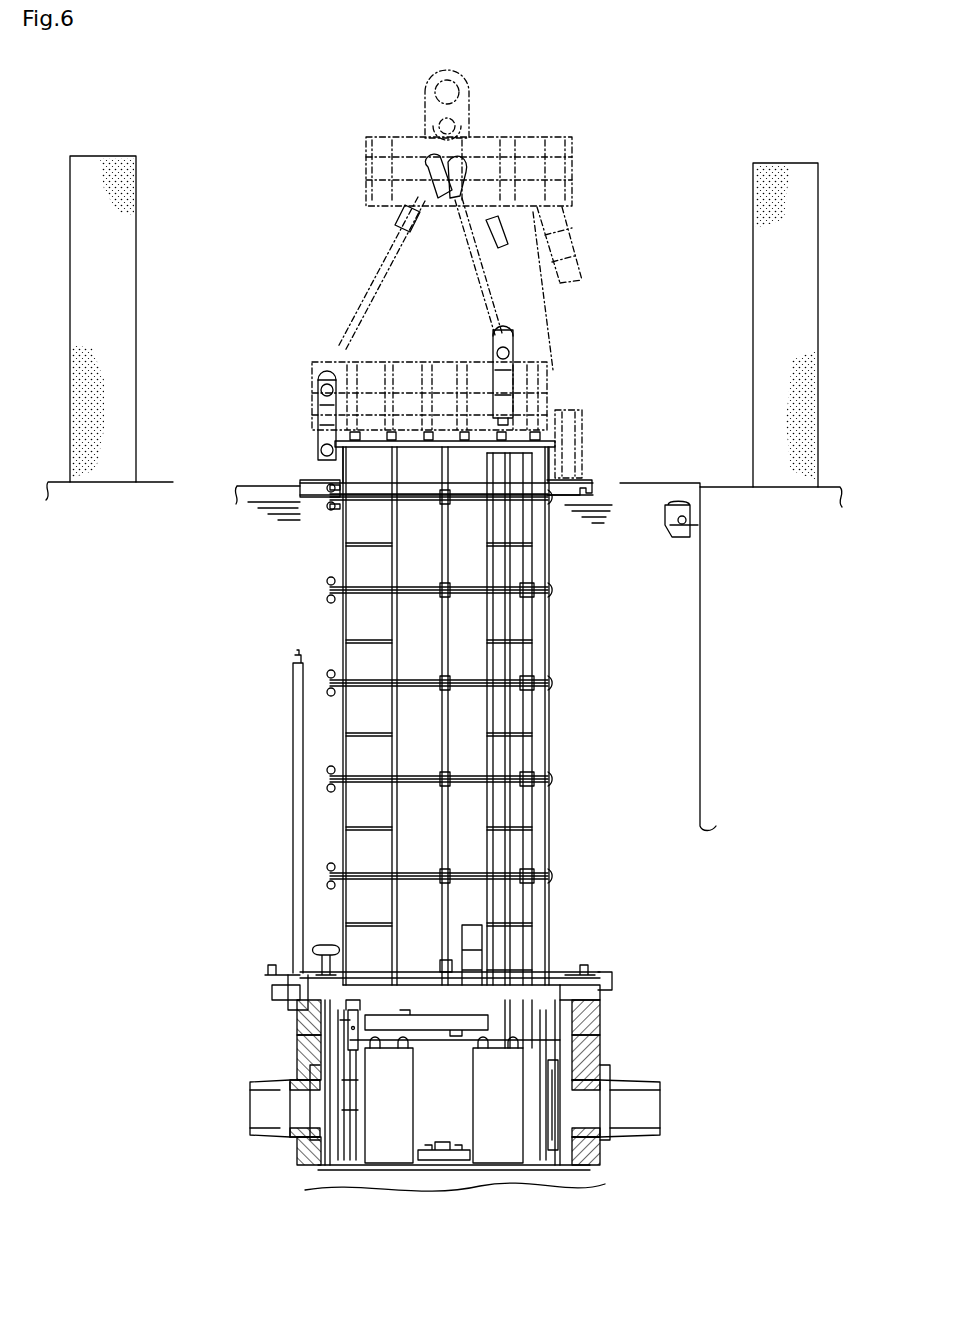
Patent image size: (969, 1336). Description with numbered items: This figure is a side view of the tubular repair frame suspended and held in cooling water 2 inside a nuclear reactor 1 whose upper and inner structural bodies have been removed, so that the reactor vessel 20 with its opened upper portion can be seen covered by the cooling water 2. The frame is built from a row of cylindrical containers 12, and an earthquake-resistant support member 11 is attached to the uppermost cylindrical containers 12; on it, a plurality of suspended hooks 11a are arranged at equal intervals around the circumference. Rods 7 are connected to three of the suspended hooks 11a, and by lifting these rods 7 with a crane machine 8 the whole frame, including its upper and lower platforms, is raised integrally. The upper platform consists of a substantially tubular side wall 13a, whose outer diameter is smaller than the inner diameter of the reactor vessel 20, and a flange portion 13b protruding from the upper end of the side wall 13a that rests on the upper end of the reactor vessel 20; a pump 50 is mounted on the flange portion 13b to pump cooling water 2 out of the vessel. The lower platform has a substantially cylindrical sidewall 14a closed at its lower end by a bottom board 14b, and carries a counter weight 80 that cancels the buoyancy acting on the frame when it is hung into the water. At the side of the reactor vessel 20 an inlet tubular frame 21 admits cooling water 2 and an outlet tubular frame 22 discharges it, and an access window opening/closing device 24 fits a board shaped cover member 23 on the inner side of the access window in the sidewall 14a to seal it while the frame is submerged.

The nuclear reactor 1 is at (658, 404).
The cooling water 2 is at (640, 535).
The rods 7 is at (362, 274).
The crane machine 8 is at (470, 104).
The earthquake-resistant support member 11 is at (360, 462).
The suspended hooks 11a is at (320, 395).
The cylindrical containers 12 is at (546, 562).
The side wall 13a is at (590, 1030).
The flange portion 13b is at (570, 977).
The sidewall 14a is at (575, 1160).
The bottom board 14b is at (470, 1162).
The reactor vessel 20 is at (290, 1016).
The inlet tubular frame 21 is at (640, 1078).
The outlet tubular frame 22 is at (275, 1075).
The cover member 23 is at (330, 1150).
The access window opening/closing device 24 is at (356, 1150).
The pump 50 is at (322, 945).
The counter weight 80 is at (393, 1140).